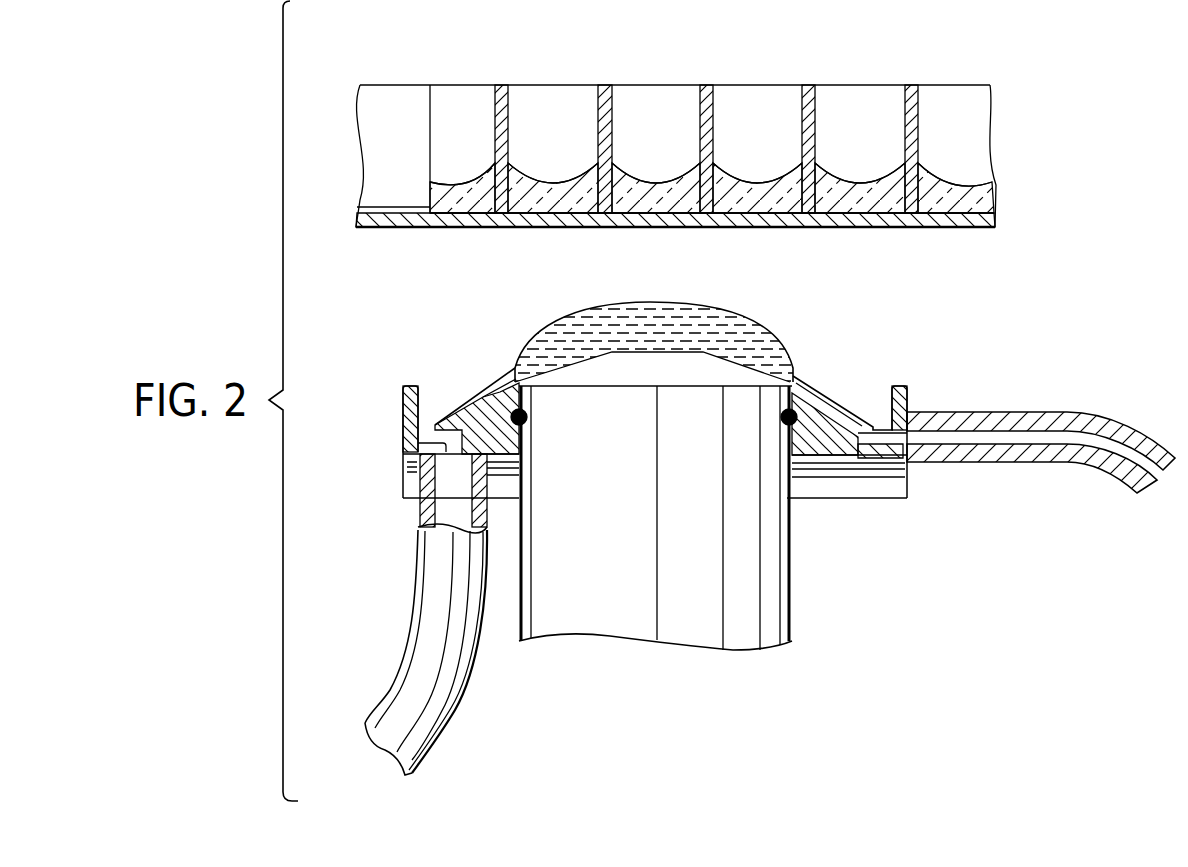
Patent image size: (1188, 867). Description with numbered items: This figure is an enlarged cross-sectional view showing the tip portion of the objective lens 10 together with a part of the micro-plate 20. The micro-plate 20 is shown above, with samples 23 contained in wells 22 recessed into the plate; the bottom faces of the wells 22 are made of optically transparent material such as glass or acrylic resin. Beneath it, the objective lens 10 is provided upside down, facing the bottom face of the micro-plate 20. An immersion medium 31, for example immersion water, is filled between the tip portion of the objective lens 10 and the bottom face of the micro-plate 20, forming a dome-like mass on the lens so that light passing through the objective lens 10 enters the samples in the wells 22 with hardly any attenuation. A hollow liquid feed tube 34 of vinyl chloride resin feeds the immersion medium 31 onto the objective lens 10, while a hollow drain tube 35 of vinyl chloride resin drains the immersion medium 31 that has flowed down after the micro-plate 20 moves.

The objective lens 10 is at (738, 638).
The micro-plate 20 is at (405, 104).
The wells 22 is at (549, 133).
The samples 23 is at (636, 188).
The immersion medium 31 is at (763, 328).
The liquid feed tube 34 is at (958, 458).
The drain tube 35 is at (450, 712).